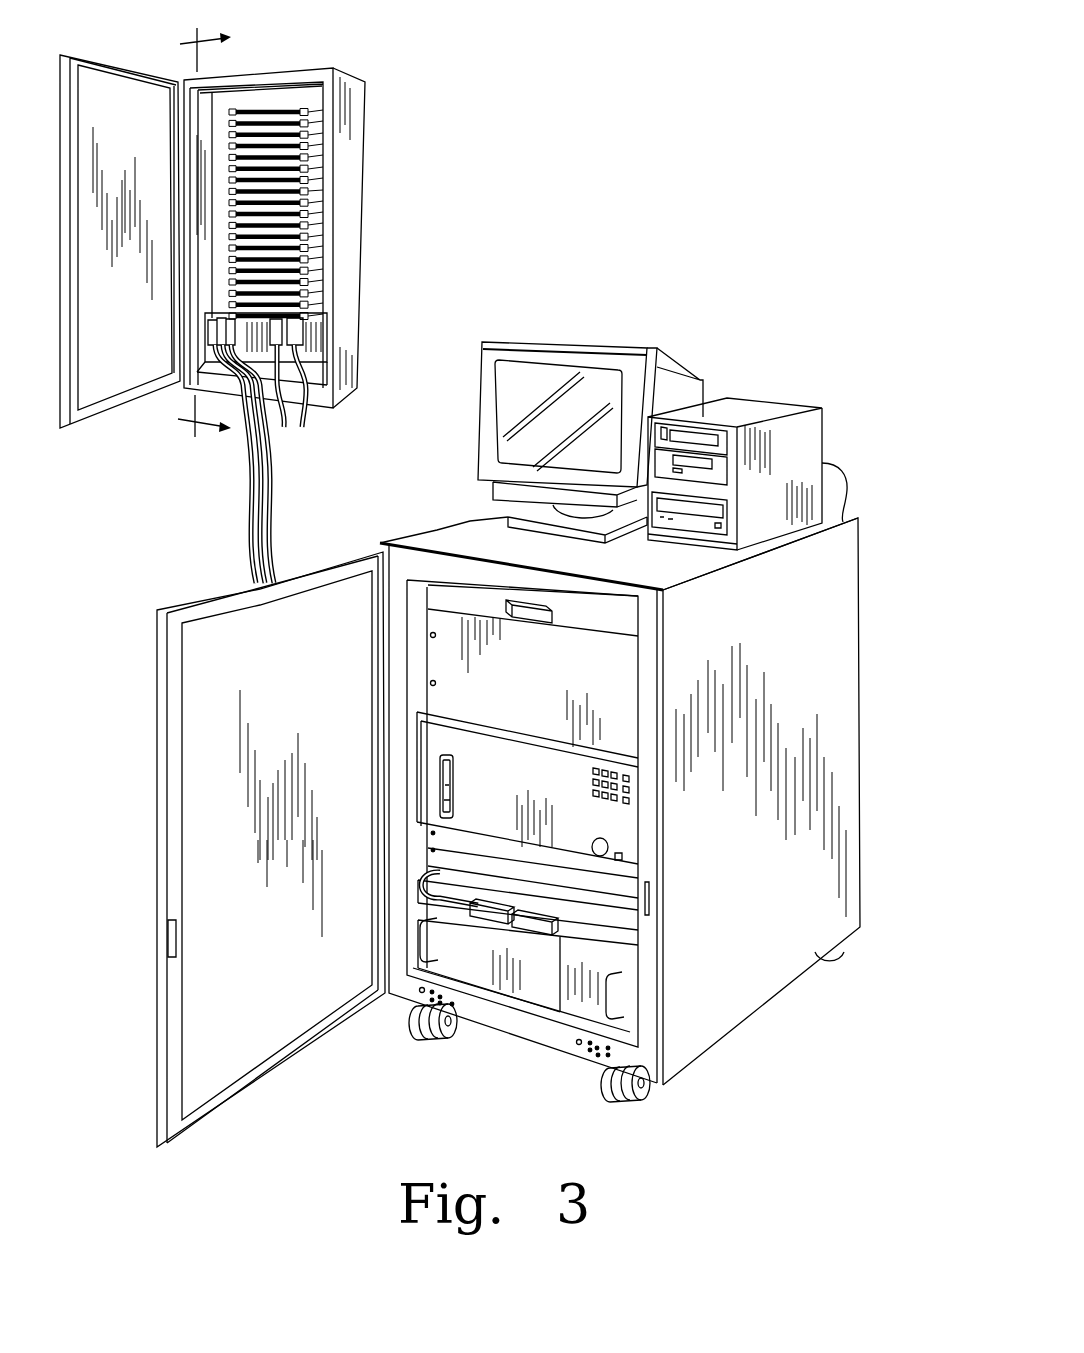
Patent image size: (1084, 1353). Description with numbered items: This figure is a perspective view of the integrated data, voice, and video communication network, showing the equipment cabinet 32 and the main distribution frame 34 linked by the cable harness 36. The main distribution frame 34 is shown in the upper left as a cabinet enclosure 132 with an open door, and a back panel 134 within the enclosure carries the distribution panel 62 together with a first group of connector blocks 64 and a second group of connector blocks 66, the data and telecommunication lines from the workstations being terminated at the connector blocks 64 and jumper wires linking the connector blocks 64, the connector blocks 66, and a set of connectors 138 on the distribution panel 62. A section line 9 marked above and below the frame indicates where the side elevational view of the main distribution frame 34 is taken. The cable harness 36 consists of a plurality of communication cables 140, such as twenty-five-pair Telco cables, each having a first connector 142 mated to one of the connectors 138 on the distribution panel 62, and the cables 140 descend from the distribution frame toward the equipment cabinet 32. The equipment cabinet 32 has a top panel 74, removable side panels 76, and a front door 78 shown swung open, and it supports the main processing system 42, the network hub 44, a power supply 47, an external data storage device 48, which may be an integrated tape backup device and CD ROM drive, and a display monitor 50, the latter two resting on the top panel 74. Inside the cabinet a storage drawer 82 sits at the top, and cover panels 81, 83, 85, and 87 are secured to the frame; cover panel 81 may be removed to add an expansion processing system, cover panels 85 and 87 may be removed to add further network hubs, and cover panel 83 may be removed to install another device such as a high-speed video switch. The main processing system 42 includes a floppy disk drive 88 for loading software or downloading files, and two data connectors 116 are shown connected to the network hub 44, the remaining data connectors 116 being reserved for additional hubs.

The section line 9— 9 is at (204, 234).
The equipment cabinet 32 is at (545, 836).
The main distribution frame 34 is at (248, 229).
The cable harness 36 is at (237, 464).
The main processing system 42 is at (566, 788).
The network hub 44 is at (618, 947).
The power supply 47 is at (538, 973).
The external data storage device 48 is at (823, 427).
The display monitor 50 is at (573, 342).
The distribution panel 62 is at (302, 330).
The first group of connector blocks 64 is at (318, 180).
The second group of connector blocks 66 is at (318, 262).
The top panel 74 is at (437, 538).
The removable side panel 76 is at (835, 548).
The front door 78 is at (172, 1128).
The cover panel 81 is at (613, 695).
The storage drawer 82 is at (633, 633).
The cover panel 83 is at (617, 882).
The cover panel 85 is at (618, 905).
The cover panel 87 is at (618, 924).
The floppy disk drive 88 is at (453, 780).
The data connectors 116 is at (477, 917).
The cabinet enclosure 132 is at (345, 212).
The back panel 134 is at (283, 90).
The connectors 138 is at (300, 399).
The communication cables 140 is at (240, 500).
The first connector 142 is at (300, 338).